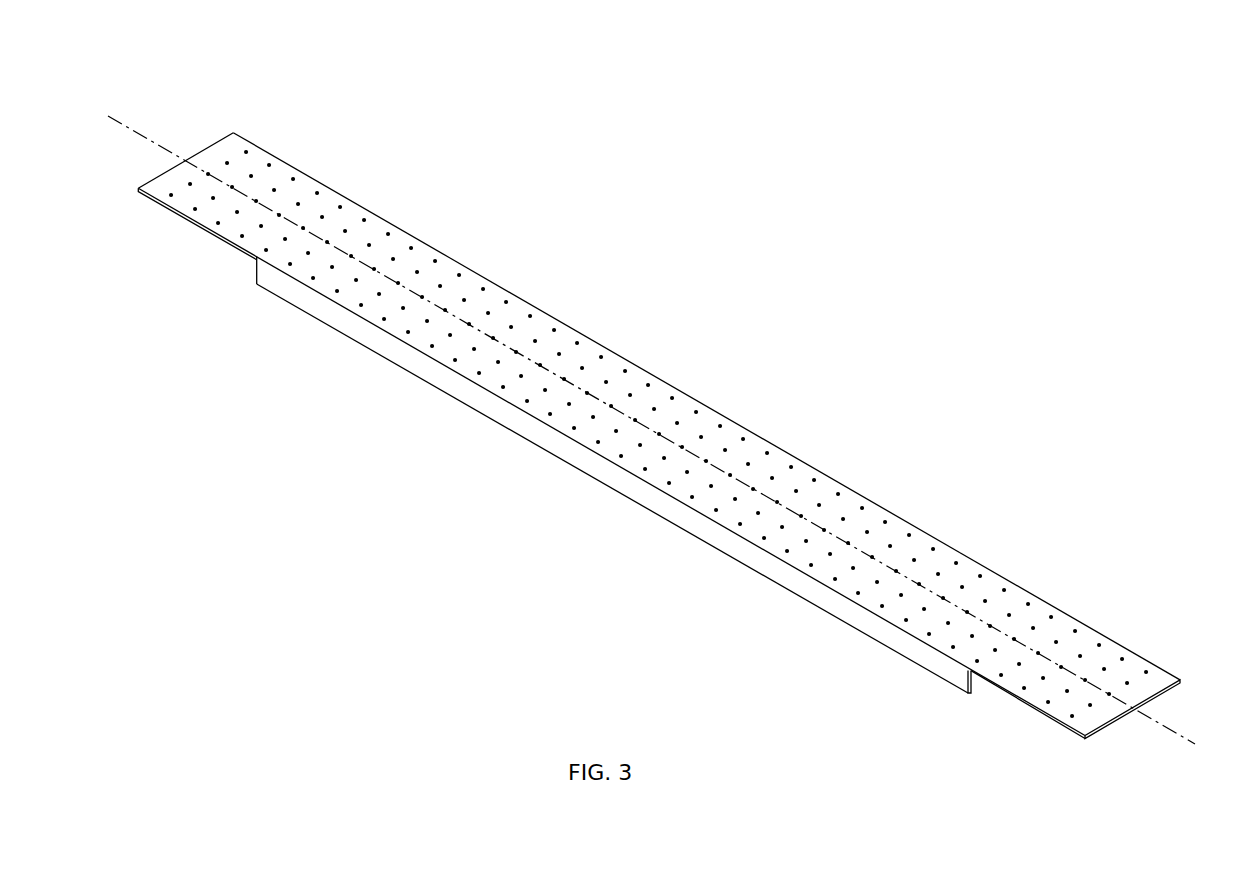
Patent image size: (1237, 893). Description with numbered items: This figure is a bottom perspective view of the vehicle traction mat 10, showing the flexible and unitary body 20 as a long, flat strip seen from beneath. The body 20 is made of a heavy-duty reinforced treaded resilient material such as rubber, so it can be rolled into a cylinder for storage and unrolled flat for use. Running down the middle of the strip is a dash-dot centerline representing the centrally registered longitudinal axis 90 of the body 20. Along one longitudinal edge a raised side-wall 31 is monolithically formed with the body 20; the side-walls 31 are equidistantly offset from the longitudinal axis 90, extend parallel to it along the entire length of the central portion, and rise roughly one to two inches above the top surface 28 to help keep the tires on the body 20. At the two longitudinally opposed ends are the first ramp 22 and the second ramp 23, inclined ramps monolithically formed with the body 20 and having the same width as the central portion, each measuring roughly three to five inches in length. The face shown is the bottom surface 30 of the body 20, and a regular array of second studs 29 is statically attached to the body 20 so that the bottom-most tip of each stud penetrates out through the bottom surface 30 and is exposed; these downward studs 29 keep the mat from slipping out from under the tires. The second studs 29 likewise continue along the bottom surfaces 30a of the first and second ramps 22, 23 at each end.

The vehicle traction mat 10 is at (685, 212).
The body 20 is at (739, 418).
The first ramp 22 is at (1097, 670).
The second ramp 23 is at (252, 175).
The top surface 28 is at (328, 610).
The second studs 29 is at (450, 335).
The bottom surface 30 is at (543, 368).
The bottom surfaces of the ramps 30a is at (260, 212).
The raised side-walls 31 is at (473, 390).
The longitudinal axis 90 is at (163, 145).